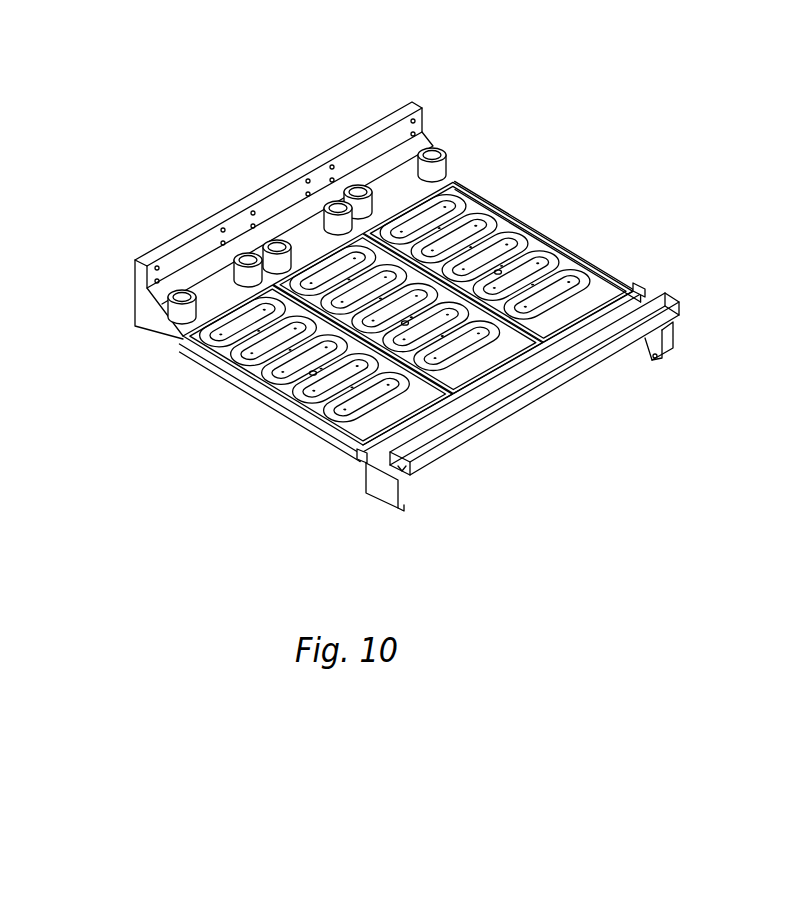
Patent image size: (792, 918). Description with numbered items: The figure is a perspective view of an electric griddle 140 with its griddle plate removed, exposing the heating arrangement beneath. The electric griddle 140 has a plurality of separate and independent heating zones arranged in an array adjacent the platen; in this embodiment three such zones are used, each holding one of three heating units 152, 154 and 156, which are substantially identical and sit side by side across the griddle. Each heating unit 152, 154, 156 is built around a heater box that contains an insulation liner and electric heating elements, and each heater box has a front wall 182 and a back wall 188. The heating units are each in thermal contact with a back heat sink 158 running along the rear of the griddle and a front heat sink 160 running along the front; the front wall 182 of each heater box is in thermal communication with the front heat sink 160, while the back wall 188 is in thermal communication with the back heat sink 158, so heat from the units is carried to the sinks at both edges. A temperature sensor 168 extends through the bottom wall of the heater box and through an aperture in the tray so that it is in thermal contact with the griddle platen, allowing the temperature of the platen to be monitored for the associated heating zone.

The electric griddle 140 is at (571, 129).
The heating unit 152 is at (260, 447).
The heating unit 154 is at (513, 372).
The heating unit 156 is at (603, 318).
The back heat sink 158 is at (398, 167).
The front heat sink 160 is at (361, 457).
The temperature sensor 168 is at (408, 313).
The front wall 182 is at (641, 289).
The back wall 188 is at (447, 175).